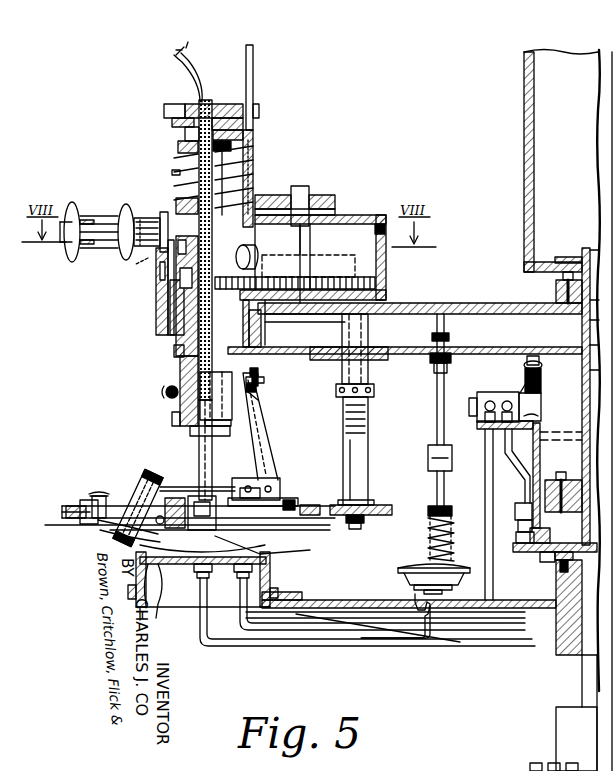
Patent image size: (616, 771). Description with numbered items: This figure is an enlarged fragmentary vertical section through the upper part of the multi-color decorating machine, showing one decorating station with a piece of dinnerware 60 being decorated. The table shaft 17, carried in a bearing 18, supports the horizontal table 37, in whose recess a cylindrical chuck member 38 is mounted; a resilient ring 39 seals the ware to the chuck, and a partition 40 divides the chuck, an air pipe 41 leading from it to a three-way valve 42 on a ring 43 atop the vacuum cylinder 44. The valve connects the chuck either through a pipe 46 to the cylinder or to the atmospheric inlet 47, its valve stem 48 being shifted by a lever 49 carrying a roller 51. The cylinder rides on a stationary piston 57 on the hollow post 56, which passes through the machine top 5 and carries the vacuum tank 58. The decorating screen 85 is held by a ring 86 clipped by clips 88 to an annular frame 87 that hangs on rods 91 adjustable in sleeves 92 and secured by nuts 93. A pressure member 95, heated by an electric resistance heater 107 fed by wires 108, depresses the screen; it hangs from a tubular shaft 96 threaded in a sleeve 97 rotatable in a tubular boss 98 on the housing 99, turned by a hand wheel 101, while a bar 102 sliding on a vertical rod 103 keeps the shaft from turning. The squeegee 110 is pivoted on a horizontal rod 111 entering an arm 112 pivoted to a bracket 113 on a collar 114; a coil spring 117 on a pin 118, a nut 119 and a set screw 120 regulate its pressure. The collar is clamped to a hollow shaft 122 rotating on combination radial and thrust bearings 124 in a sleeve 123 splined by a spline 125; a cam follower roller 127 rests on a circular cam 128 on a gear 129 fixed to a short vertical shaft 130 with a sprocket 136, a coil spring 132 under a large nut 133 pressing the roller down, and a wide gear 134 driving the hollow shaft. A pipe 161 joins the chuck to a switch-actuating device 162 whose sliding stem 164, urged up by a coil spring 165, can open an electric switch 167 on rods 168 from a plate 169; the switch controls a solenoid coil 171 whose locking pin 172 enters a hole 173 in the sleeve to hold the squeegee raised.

The top 5 is at (500, 305).
The table shaft 17 is at (582, 680).
The bearing 18 is at (566, 737).
The table 37 is at (541, 589).
The chuck member 38 is at (268, 575).
The resilient ring 39 is at (268, 554).
The partition 40 is at (140, 609).
The air pipe 41 is at (220, 642).
The three-way valve 42 is at (515, 395).
The ring 43 is at (484, 433).
The vacuum cylinder 44 is at (526, 459).
The pipe 46 is at (530, 467).
The inlet 47 is at (475, 405).
The valve stem 48 is at (538, 418).
The lever 49 is at (541, 374).
The roller 51 is at (530, 370).
The hollow post 56 is at (581, 328).
The stationary piston 57 is at (572, 481).
The vacuum tank 58 is at (527, 142).
The piece of dinnerware 60 is at (272, 540).
The decorating screen 85 is at (100, 530).
The ring 86 is at (80, 522).
The annular frame 87 is at (68, 510).
The clips 88 is at (80, 501).
The rods 91 is at (350, 453).
The sleeves 92 is at (370, 379).
The nuts 93 is at (342, 539).
The pressure member 95 is at (166, 597).
The tubular shaft 96 is at (198, 440).
The sleeve 97 is at (198, 134).
The tubular boss 98 is at (196, 161).
The housing 99 is at (168, 316).
The hand wheel 101 is at (176, 124).
The bar 102 is at (236, 106).
The vertical rod 103 is at (254, 99).
The electric resistance heater 107 is at (266, 509).
The wires 108 is at (182, 73).
The squeegee 110 is at (138, 489).
The horizontal rod 111 is at (182, 479).
The arm 112 is at (258, 438).
The bracket 113 is at (238, 410).
The collar 114 is at (166, 391).
The coil spring 117 is at (255, 392).
The pin 118 is at (263, 381).
The nut 119 is at (259, 372).
The set screw 120 is at (251, 400).
The hollow shaft 122 is at (180, 364).
The sleeve 123 is at (170, 316).
The combination radial and thrust bearings 124 is at (176, 341).
The spline 125 is at (160, 278).
The cam follower roller 127 is at (246, 254).
The circular cam 128 is at (324, 256).
The gear 129 is at (376, 275).
The short vertical shaft 130 is at (297, 193).
The coil spring 132 is at (170, 173).
The large nut 133 is at (178, 146).
The wide gear 134 is at (175, 293).
The sprockets 136 is at (317, 196).
The pipe 161 is at (280, 637).
The switch-actuating device 162 is at (408, 568).
The sliding stem 164 is at (445, 513).
The coil spring 165 is at (445, 530).
The electric switch 167 is at (434, 461).
The rods 168 is at (439, 421).
The plate 169 is at (496, 345).
The solenoid coil 171 is at (98, 208).
The locking pin 172 is at (132, 261).
The hole 173 is at (154, 265).